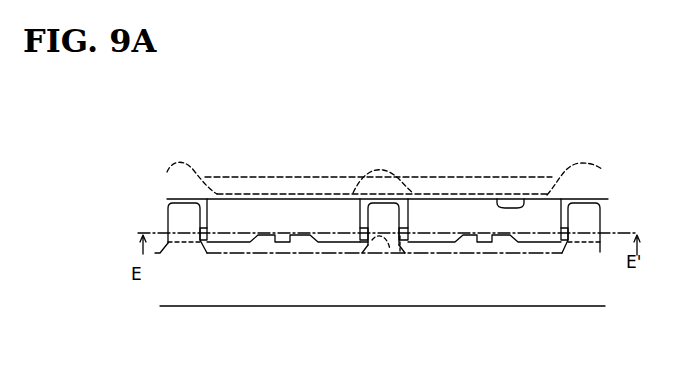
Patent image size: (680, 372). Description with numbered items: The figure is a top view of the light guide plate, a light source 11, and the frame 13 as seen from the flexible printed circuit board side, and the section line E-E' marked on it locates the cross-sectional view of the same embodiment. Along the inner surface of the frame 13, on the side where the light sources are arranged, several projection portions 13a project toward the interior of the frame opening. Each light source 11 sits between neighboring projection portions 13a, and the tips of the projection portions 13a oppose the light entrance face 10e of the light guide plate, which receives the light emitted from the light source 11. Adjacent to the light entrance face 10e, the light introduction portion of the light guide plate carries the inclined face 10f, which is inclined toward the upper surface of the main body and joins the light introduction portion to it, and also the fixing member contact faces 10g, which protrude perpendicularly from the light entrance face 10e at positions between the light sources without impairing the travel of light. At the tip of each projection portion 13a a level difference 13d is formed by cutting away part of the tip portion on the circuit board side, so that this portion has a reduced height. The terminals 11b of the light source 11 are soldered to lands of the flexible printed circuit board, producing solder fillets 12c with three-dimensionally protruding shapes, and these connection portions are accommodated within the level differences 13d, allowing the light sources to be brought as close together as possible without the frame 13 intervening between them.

The light entrance face 10e is at (523, 196).
The inclined face 10f is at (278, 182).
The fixing member contact face 10g is at (413, 190).
The light source 11 is at (225, 216).
The terminal 11b is at (365, 245).
The solder fillet 12c is at (365, 245).
The frame 13 is at (193, 297).
The projection portion 13a is at (380, 203).
The level difference 13d is at (390, 250).